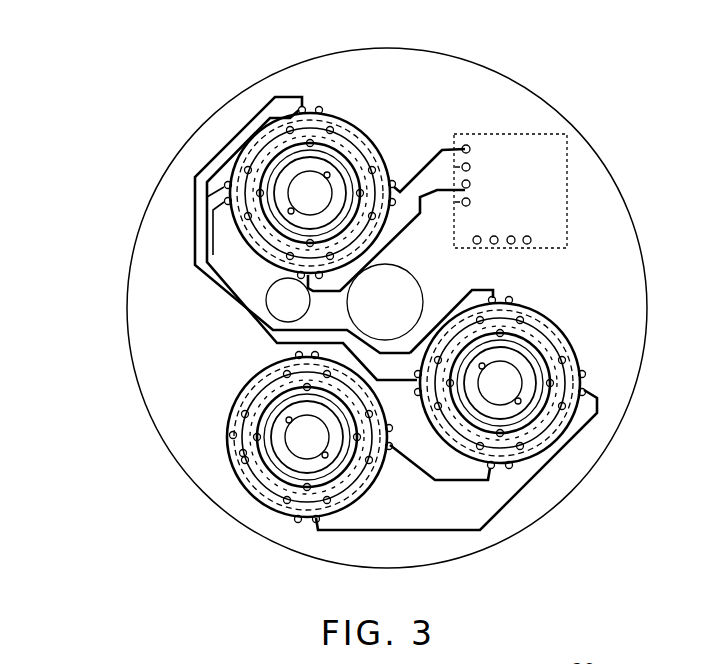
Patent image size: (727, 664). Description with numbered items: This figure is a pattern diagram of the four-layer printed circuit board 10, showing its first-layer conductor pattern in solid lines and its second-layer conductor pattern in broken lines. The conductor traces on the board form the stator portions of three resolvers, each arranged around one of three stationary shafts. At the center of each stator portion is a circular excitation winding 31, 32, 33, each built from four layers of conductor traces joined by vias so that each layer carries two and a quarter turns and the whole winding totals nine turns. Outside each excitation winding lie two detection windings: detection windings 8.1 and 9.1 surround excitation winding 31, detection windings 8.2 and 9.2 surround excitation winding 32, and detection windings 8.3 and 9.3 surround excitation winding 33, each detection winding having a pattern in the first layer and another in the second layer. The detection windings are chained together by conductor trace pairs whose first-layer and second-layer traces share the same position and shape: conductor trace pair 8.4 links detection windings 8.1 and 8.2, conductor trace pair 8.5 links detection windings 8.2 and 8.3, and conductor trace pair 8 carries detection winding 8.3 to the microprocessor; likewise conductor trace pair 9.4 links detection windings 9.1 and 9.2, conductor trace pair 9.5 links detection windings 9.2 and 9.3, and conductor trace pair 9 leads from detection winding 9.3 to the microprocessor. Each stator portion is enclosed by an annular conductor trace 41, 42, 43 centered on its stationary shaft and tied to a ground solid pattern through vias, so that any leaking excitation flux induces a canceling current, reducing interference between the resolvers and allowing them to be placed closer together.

The conductor trace pair 8 is at (415, 184).
The detection winding 8.1 is at (233, 435).
The detection winding 8.2 is at (532, 316).
The detection winding 8.3 is at (204, 238).
The conductor trace pair 8.4 is at (505, 466).
The conductor trace pair 8.5 is at (477, 290).
The conductor trace pair 9 is at (405, 228).
The detection winding 9.1 is at (290, 368).
The detection winding 9.2 is at (568, 356).
The detection winding 9.3 is at (288, 120).
The conductor trace pair 9.4 is at (428, 530).
The conductor trace pair 9.5 is at (203, 272).
The four-layer printed circuit board 10 is at (517, 82).
The excitation winding 31 is at (250, 490).
The excitation winding 32 is at (560, 372).
The excitation winding 33 is at (283, 155).
The annular conductor trace 41 is at (255, 492).
The annular conductor trace 42 is at (562, 424).
The annular conductor trace 43 is at (228, 288).